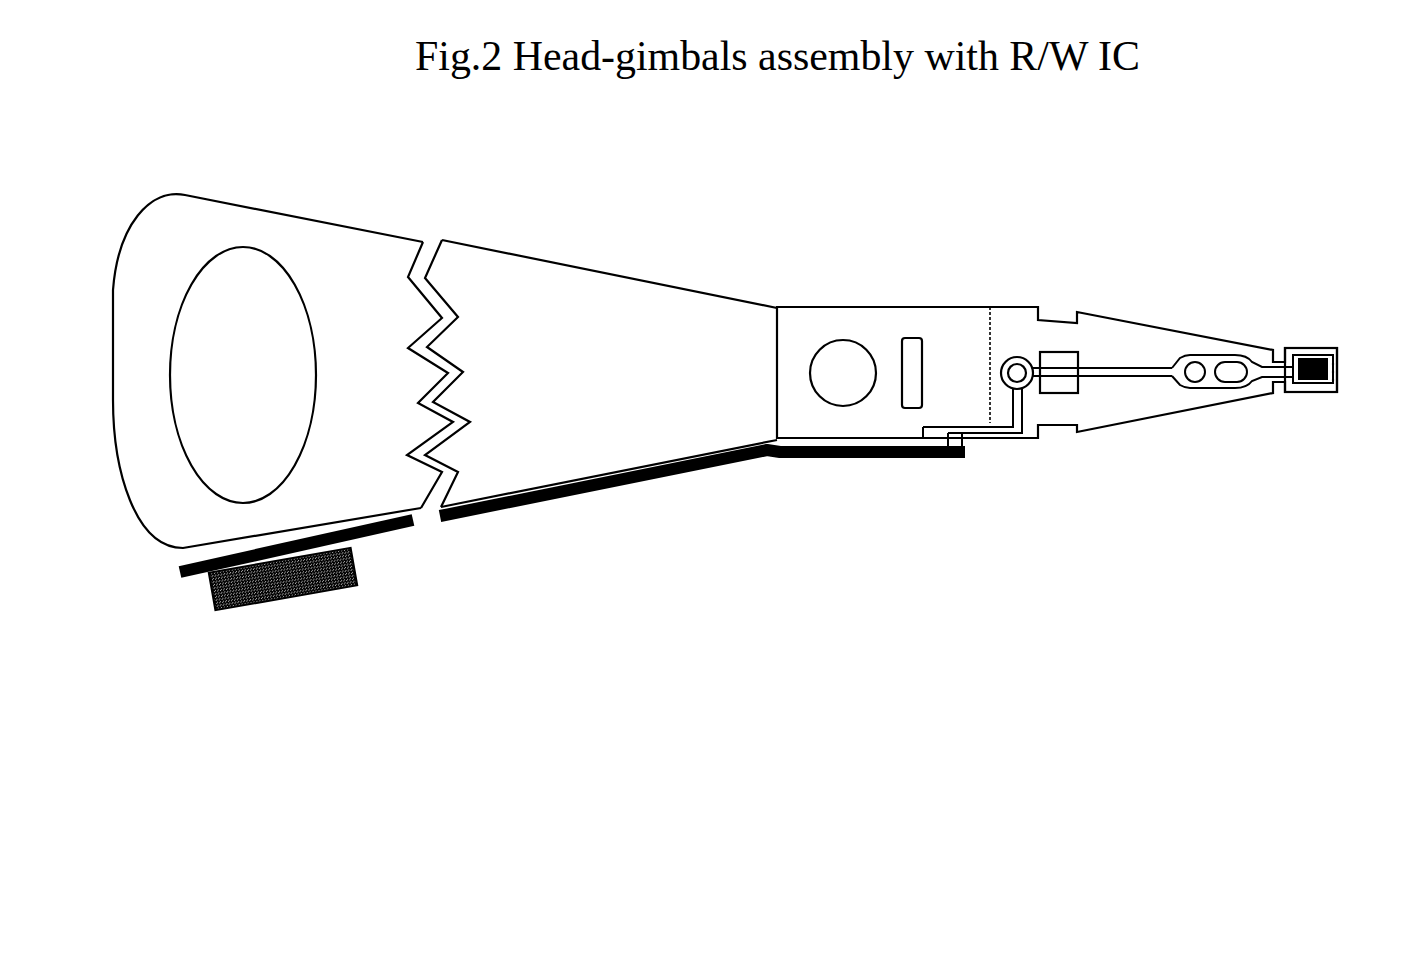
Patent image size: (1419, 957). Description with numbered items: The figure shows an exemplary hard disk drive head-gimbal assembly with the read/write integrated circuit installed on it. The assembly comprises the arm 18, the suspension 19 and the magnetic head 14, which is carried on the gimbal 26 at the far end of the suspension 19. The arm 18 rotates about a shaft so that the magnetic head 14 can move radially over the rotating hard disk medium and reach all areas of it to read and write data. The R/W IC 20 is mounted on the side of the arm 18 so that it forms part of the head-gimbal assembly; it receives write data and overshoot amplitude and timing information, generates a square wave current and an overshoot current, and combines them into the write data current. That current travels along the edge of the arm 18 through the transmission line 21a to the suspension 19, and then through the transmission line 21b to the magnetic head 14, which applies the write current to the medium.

The magnetic head 14 is at (1308, 348).
The arm 18 is at (582, 262).
The suspension 19 is at (1018, 298).
The R/W IC 20 is at (273, 598).
The transmission line 21a is at (730, 475).
The transmission line 21b is at (1122, 383).
The gimbal 26 is at (1320, 395).